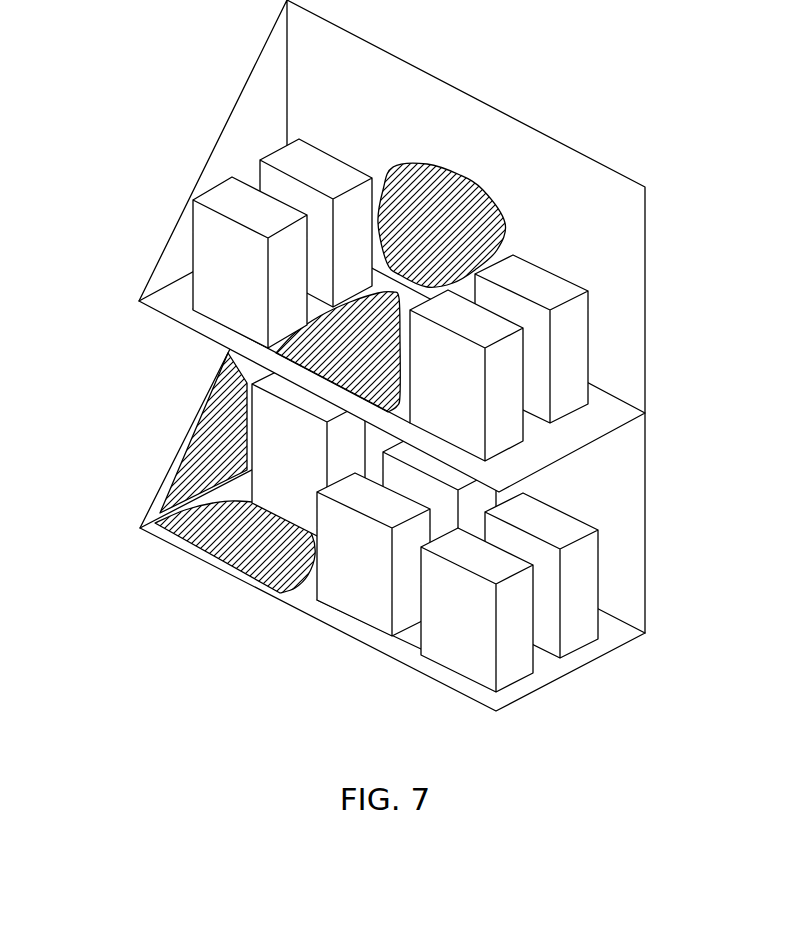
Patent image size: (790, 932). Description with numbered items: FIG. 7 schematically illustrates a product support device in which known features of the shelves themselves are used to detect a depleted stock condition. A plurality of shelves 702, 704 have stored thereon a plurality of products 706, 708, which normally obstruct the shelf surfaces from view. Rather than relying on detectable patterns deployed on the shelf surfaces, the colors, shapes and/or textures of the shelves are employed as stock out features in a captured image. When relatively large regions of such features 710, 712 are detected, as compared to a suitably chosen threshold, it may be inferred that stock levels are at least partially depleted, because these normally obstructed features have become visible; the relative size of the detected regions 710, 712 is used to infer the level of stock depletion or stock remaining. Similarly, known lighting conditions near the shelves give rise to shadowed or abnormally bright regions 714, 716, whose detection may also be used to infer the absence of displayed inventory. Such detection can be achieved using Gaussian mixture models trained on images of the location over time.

The shelf 702 is at (162, 315).
The shelf 704 is at (342, 630).
The product 706 is at (193, 267).
The product 708 is at (517, 657).
The region of known shelf features 710 is at (366, 366).
The region of known shelf features 712 is at (428, 165).
The shadowed or abnormally bright region 714 is at (180, 453).
The shadowed or abnormally bright region 716 is at (226, 565).